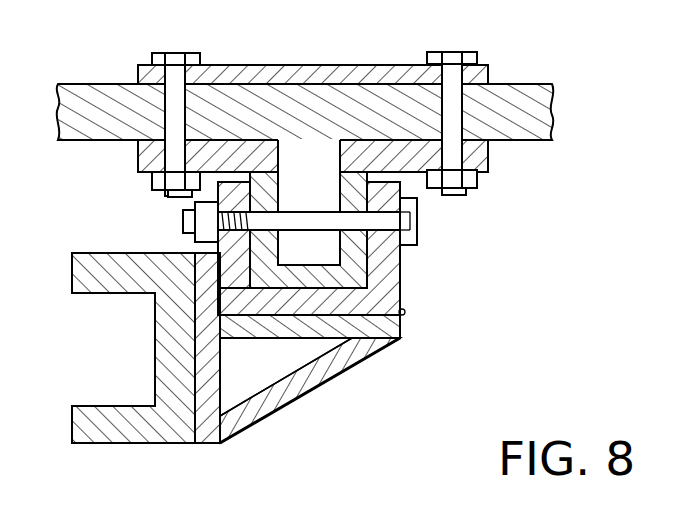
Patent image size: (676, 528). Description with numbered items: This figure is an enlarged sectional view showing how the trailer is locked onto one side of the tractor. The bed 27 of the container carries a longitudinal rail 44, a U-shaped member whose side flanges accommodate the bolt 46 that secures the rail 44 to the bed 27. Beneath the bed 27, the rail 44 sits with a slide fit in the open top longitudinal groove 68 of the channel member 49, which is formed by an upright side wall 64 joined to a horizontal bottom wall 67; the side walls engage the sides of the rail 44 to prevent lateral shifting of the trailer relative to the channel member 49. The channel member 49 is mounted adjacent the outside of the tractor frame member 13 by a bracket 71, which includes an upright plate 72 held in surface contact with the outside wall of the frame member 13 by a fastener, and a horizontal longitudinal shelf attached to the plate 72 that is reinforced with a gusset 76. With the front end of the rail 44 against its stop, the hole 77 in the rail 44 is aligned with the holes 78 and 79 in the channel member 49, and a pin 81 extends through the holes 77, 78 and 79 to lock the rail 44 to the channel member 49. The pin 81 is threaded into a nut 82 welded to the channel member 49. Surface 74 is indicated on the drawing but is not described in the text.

The frame member 13 is at (147, 430).
The bed 27 is at (520, 84).
The rail 44 is at (375, 262).
The bolt 46 is at (176, 53).
The channel member 49 is at (492, 282).
The side wall 64 is at (388, 278).
The bottom wall 67 is at (220, 298).
The groove 68 is at (297, 330).
The bracket 71 is at (318, 371).
The plate 72 is at (208, 432).
The gusset outer surface 74 is at (323, 389).
The gusset 76 is at (268, 405).
The hole 77 is at (337, 208).
The hole 78 is at (220, 270).
The hole 79 is at (478, 157).
The pin 81 is at (419, 222).
The nut 82 is at (203, 205).